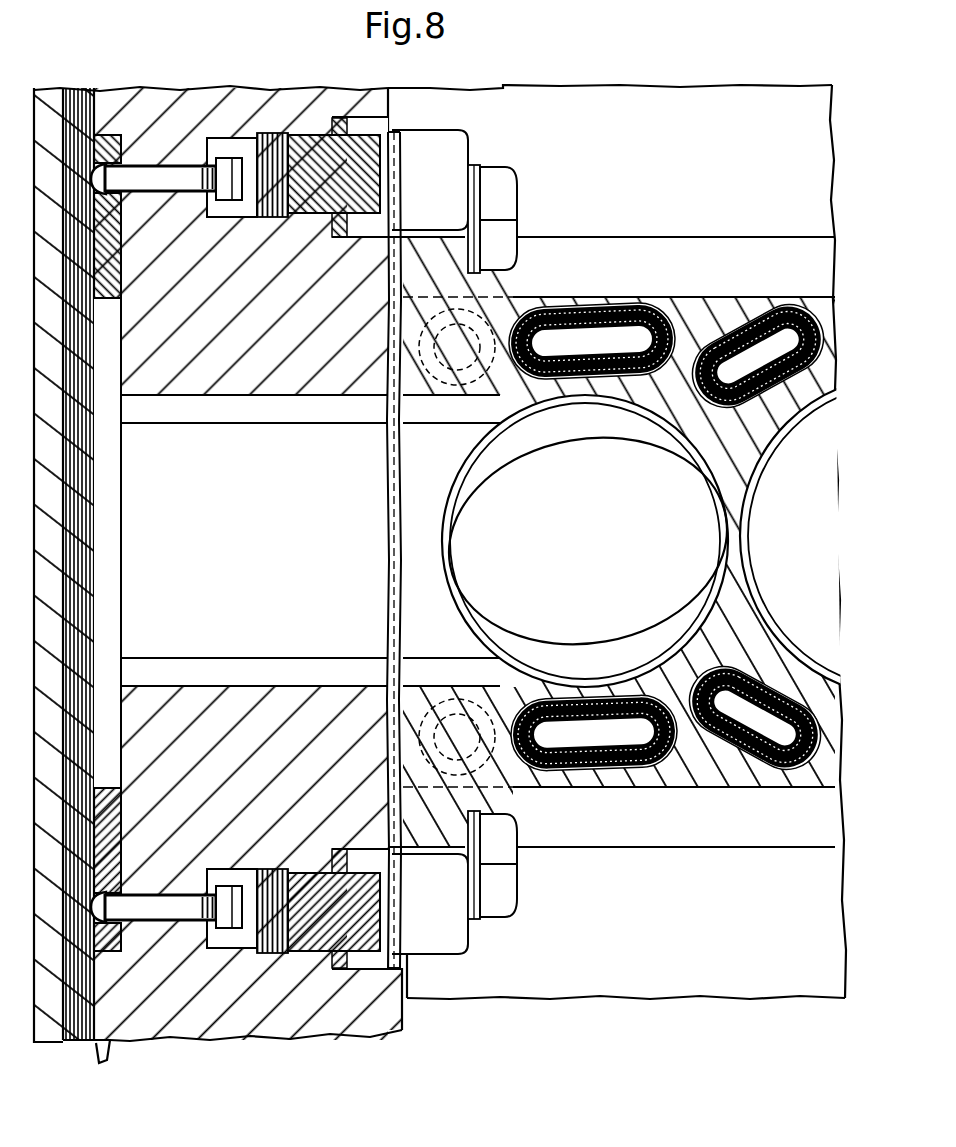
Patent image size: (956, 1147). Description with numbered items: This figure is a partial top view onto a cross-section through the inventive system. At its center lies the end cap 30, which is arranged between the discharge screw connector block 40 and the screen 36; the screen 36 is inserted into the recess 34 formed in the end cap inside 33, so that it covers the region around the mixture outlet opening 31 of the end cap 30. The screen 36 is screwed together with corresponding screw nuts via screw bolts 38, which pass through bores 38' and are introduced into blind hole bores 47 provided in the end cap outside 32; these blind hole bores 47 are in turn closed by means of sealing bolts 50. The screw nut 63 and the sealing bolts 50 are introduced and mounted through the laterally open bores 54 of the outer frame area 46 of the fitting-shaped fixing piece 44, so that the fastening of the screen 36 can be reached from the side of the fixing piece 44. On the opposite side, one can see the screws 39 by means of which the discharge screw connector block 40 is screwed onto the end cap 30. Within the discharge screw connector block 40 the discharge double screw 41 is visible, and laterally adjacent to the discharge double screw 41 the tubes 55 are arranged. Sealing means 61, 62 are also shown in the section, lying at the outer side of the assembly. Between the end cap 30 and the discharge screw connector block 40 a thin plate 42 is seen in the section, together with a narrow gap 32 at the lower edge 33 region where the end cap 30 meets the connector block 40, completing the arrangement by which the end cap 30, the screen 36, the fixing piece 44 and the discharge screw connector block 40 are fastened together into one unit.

The end cap 30 is at (178, 106).
The mixture outlet opening 31 is at (124, 522).
The end cap outside 32 is at (421, 1028).
The end cap inside 33 is at (96, 1052).
The recess 34 is at (115, 965).
The screen 36 is at (163, 920).
The screw bolts 38 is at (157, 947).
The bores 38' is at (230, 987).
The screws 39 is at (518, 895).
The discharge screw connector block 40 is at (836, 818).
The discharge double screw 41 is at (631, 551).
The plate 42 is at (388, 535).
The fitting-shaped fixing piece 44 is at (483, 942).
The outer frame area 46 is at (462, 955).
The blind hole bores 47 is at (288, 968).
The sealing bolts 50 is at (322, 955).
The laterally open bores 54 is at (433, 943).
The tubes 55 is at (793, 735).
The sealing means 61 is at (50, 88).
The sealing means 62 is at (80, 89).
The screw nut 63 is at (253, 945).